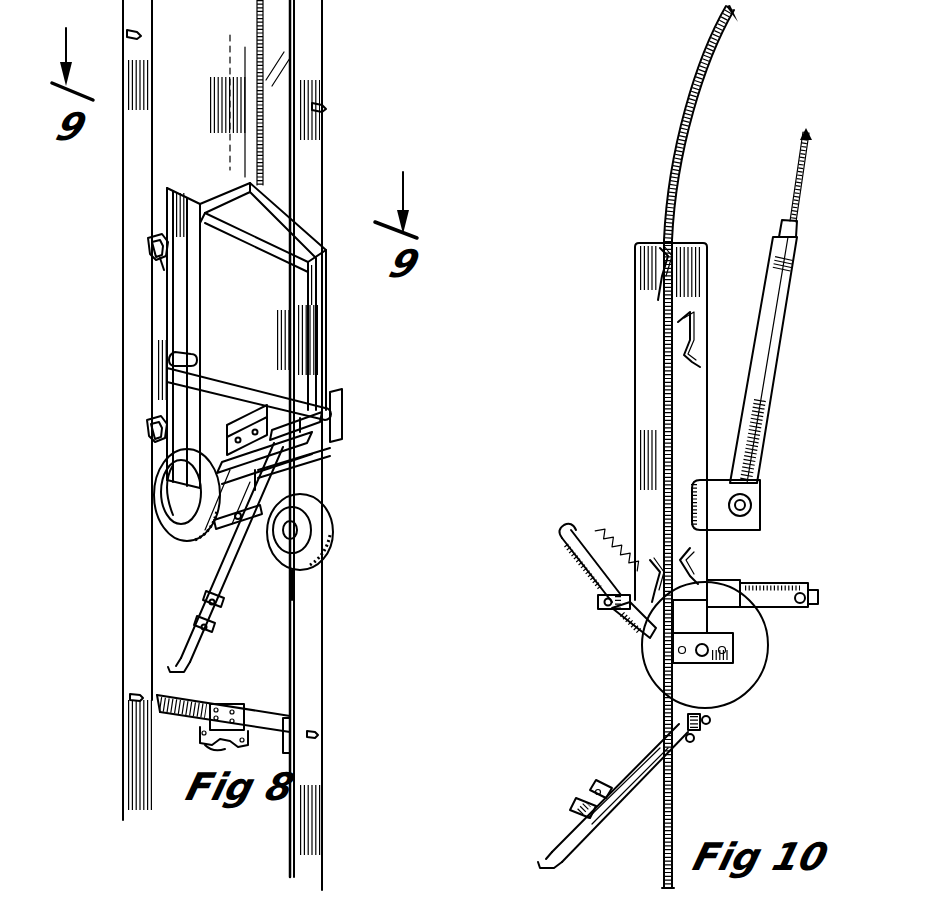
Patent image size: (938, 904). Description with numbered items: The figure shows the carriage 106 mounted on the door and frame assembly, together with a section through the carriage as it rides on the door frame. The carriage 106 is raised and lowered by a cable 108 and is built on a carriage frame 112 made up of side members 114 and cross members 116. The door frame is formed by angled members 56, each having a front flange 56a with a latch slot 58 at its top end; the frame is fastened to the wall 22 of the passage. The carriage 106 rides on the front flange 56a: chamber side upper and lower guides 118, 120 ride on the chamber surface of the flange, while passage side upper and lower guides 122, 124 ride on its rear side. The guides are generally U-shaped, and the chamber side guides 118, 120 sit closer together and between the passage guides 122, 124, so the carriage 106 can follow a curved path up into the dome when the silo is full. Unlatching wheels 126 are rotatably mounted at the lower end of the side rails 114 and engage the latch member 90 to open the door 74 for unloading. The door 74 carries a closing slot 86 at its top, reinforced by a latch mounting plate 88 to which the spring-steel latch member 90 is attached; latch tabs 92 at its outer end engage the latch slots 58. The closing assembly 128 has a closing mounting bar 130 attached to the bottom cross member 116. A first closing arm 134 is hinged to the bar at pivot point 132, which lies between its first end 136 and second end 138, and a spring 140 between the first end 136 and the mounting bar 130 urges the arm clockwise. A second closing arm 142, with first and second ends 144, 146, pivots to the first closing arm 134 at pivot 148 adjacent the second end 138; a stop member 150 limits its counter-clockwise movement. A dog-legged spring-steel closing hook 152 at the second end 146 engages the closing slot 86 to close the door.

In FIG. 8, the wall structure 22 is at (197, 116).
In FIG. 8, the angled member 56 is at (326, 60).
In FIG. 10, the angled member 56 is at (716, 91).
In FIG. 8, the front flange 56a is at (318, 80).
In FIG. 10, the front flange 56a is at (673, 802).
In FIG. 8, the latch slot 58 is at (140, 34).
In FIG. 8, the door 74 is at (305, 752).
In FIG. 8, the closing slot 86 is at (213, 745).
In FIG. 8, the latch mounting plate 88 is at (222, 706).
In FIG. 8, the latch member 90 is at (275, 708).
In FIG. 8, the latch tab 92 is at (140, 688).
In FIG. 8, the carriage 106 is at (326, 217).
In FIG. 10, the carriage 106 is at (722, 200).
In FIG. 8, the cable 108 is at (257, 16).
In FIG. 10, the cable 108 is at (803, 164).
In FIG. 8, the carriage frame 112 is at (140, 306).
In FIG. 10, the carriage frame 112 is at (616, 244).
In FIG. 8, the side member 114 is at (165, 213).
In FIG. 10, the side member 114 is at (642, 350).
In FIG. 8, the cross member 116 is at (237, 255).
In FIG. 8, the chamber side upper guide 118 is at (148, 240).
In FIG. 10, the chamber side upper guide 118 is at (700, 304).
In FIG. 8, the chamber side lower guide 120 is at (147, 434).
In FIG. 10, the chamber side lower guide 120 is at (692, 548).
In FIG. 10, the passage side upper guide 122 is at (655, 297).
In FIG. 10, the passage side lower guide 124 is at (640, 618).
In FIG. 8, the unlatching wheel 126 is at (326, 520).
In FIG. 10, the unlatching wheel 126 is at (762, 667).
In FIG. 8, the closing assembly 128 is at (195, 559).
In FIG. 10, the closing assembly 128 is at (565, 776).
In FIG. 8, the closing mounting bar 130 is at (300, 470).
In FIG. 10, the closing mounting bar 130 is at (815, 606).
In FIG. 10, the pivot point 132 is at (598, 600).
In FIG. 10, the first closing arm 134 is at (565, 580).
In FIG. 10, the first end 136 is at (560, 540).
In FIG. 10, the second end 138 is at (712, 734).
In FIG. 10, the spring 140 is at (598, 527).
In FIG. 8, the second closing arm 142 is at (178, 596).
In FIG. 10, the second closing arm 142 is at (628, 760).
In FIG. 8, the first end 144 is at (326, 580).
In FIG. 10, the first end 144 is at (694, 740).
In FIG. 8, the second end 146 is at (194, 620).
In FIG. 10, the second end 146 is at (572, 834).
In FIG. 10, the pivot 148 is at (705, 718).
In FIG. 8, the stop member 150 is at (285, 497).
In FIG. 8, the closing hook 152 is at (168, 666).
In FIG. 10, the closing hook 152 is at (553, 860).